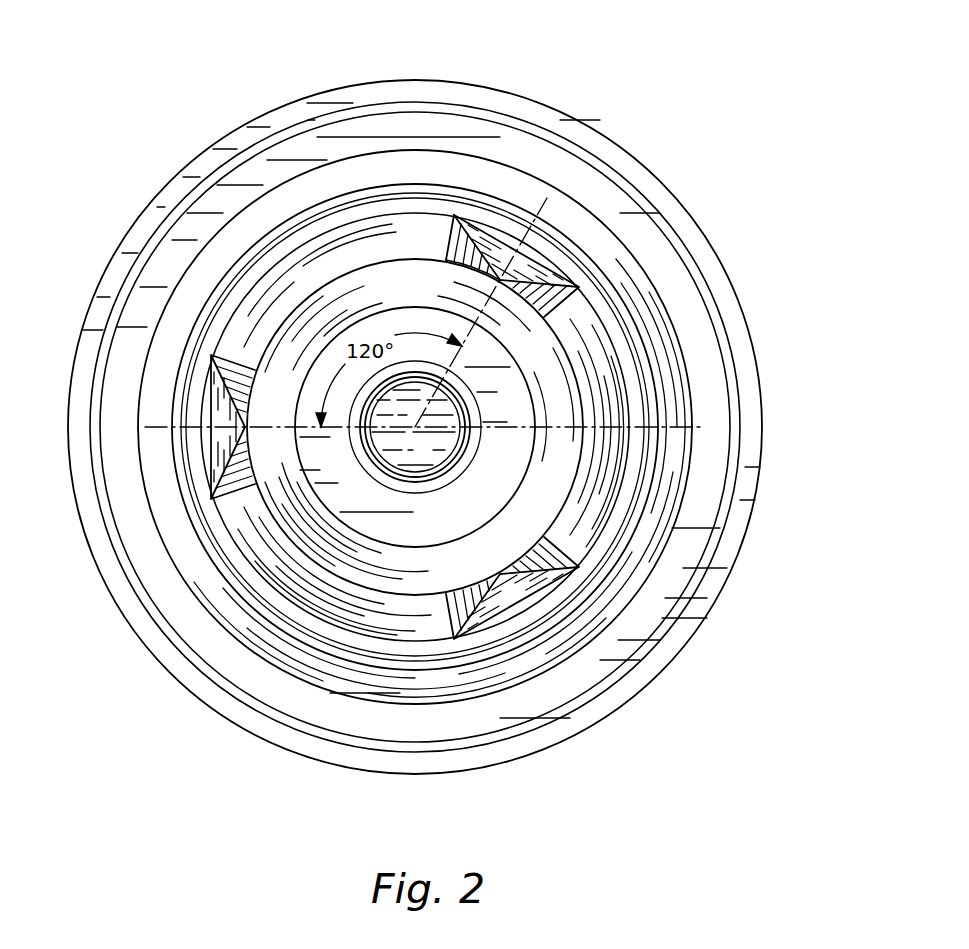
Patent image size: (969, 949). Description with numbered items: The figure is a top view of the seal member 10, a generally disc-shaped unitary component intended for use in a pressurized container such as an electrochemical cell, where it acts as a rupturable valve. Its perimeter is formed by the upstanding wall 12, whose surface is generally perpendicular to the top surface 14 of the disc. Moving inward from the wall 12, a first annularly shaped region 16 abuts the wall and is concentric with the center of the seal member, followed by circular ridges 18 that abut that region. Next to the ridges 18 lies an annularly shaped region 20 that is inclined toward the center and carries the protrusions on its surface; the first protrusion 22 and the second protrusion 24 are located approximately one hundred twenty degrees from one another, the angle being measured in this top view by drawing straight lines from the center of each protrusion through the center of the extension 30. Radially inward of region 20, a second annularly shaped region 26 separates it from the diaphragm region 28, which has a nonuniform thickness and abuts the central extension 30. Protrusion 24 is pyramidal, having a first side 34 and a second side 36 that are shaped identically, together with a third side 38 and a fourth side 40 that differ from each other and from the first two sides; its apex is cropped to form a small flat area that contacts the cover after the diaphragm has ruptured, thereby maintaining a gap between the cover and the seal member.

The seal member 10 is at (543, 80).
The upstanding wall 12 is at (655, 655).
The top surface 14 is at (507, 426).
The first annularly shaped region 16 is at (135, 553).
The circular ridges 18 is at (215, 292).
The annularly shaped region 20 is at (600, 362).
The first protrusion 22 is at (211, 401).
The second protrusion 24 is at (558, 244).
The second annularly shaped region 26 is at (280, 507).
The diaphragm region 28 is at (338, 493).
The extension 30 is at (440, 473).
The first side 34 is at (455, 258).
The second side 36 is at (556, 300).
The third side 38 is at (454, 279).
The fourth side 40 is at (492, 238).